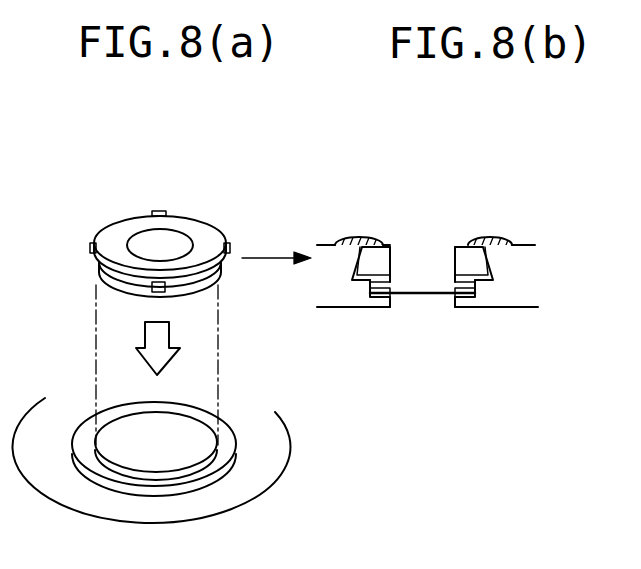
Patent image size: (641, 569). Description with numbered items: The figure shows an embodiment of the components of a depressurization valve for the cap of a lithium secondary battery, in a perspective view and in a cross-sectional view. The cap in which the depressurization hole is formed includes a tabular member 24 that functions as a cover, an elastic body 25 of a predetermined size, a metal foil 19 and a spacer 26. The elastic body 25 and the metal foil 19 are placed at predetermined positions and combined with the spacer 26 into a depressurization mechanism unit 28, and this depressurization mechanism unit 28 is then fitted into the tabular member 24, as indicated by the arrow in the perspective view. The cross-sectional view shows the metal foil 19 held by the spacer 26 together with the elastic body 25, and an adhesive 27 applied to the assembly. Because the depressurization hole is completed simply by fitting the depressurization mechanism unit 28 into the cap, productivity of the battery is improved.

In FIG. 8A, the depressurization mechanism unit 28 is at (224, 236).
In FIG. 8A, the tabular member 24 is at (278, 442).
In FIG. 8B, the spacer 26 is at (466, 265).
In FIG. 8B, the adhesive 27 is at (507, 241).
In FIG. 8B, the elastic body 25 is at (478, 297).
In FIG. 8B, the metal foil 19 is at (423, 294).